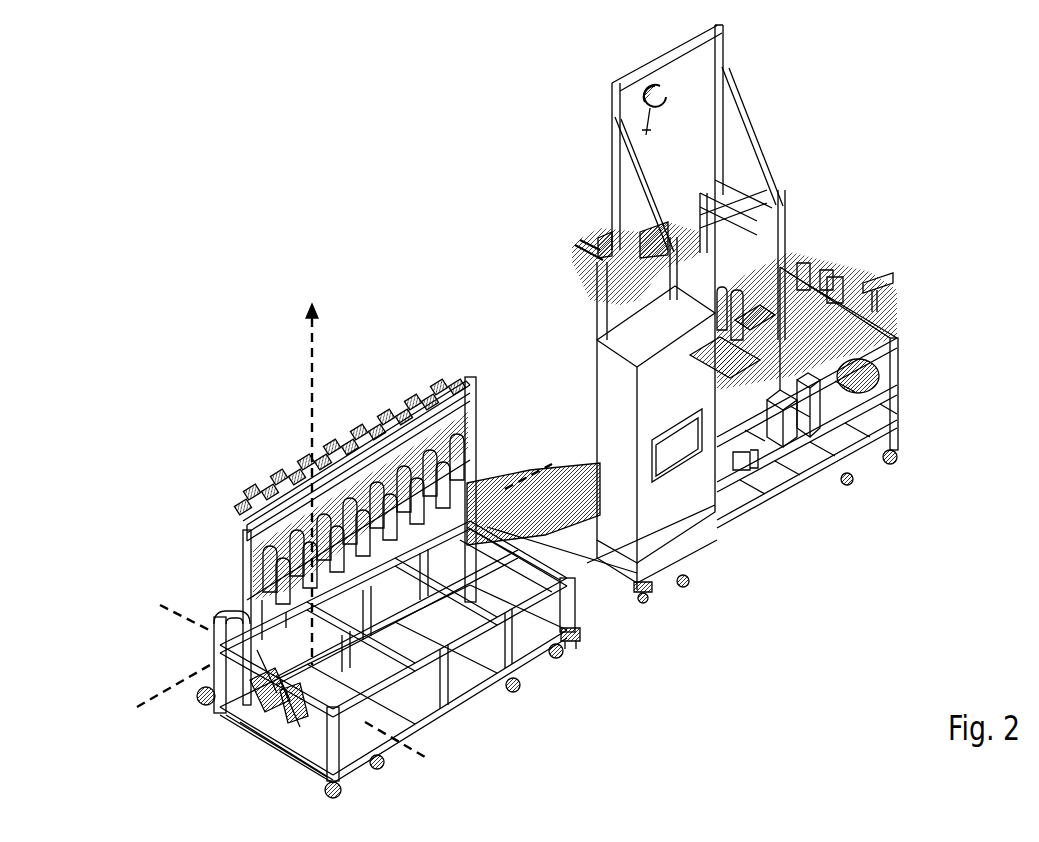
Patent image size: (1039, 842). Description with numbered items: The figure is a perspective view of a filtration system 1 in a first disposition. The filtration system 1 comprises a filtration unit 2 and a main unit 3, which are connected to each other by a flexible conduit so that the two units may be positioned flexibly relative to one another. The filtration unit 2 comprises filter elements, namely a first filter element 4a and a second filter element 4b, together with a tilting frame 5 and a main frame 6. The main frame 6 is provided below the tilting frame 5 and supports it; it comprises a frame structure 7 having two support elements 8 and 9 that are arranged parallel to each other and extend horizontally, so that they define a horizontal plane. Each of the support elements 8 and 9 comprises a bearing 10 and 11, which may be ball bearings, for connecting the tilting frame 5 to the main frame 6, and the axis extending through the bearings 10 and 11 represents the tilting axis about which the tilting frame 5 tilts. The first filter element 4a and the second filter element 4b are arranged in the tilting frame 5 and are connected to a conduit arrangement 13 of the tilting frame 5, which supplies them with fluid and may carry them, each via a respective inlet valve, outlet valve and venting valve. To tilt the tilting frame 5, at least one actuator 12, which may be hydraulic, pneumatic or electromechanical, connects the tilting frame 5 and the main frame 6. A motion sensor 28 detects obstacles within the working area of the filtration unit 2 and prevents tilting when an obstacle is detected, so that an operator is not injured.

The filtration system 1 is at (233, 126).
The filtration unit 2 is at (246, 470).
The main unit 3 is at (910, 256).
The first filter element 4a is at (260, 578).
The second filter element 4b is at (305, 540).
The tilting frame 5 is at (236, 540).
The main frame 6 is at (243, 729).
The frame structure 7 is at (473, 698).
The support element 8 is at (643, 590).
The support element 9 is at (362, 713).
The bearing 10 is at (214, 631).
The bearing 11 is at (499, 481).
The actuator 12 is at (258, 727).
The conduit arrangement 13 is at (452, 383).
The motion sensor 28 is at (580, 632).